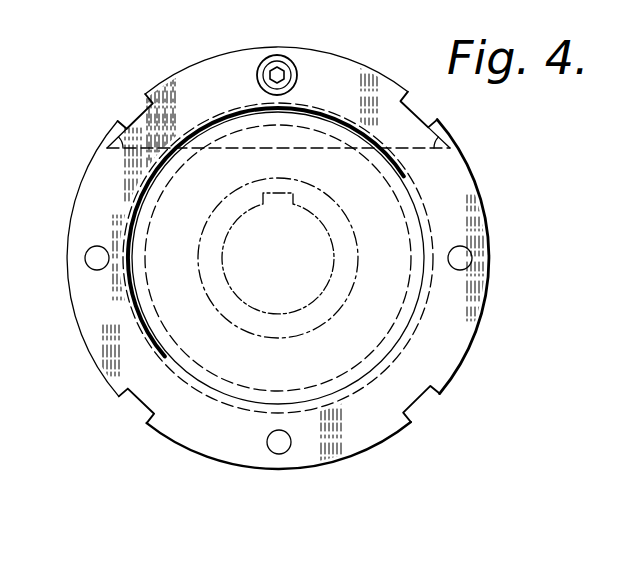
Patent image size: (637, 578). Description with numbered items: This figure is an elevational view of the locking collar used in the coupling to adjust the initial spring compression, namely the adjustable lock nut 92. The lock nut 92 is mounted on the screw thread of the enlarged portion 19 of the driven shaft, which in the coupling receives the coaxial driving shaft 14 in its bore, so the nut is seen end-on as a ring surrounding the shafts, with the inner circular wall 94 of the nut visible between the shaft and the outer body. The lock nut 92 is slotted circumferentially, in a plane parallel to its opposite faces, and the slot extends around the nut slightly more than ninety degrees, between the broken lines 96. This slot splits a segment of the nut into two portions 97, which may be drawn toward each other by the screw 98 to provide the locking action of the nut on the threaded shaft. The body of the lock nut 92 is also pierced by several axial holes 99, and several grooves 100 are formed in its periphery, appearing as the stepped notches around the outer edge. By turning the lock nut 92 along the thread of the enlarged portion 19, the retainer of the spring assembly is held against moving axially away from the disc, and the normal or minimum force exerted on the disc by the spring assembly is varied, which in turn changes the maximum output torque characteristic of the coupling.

The driving shaft 14 is at (339, 222).
The enlarged portion 19 is at (258, 122).
The lock nut 92 is at (334, 63).
The inner circular wall 94 is at (273, 401).
The broken lines 96 is at (112, 141).
The portions 97 is at (202, 70).
The screw 98 is at (279, 62).
The axial holes 99 is at (85, 259).
The grooves 100 is at (137, 118).